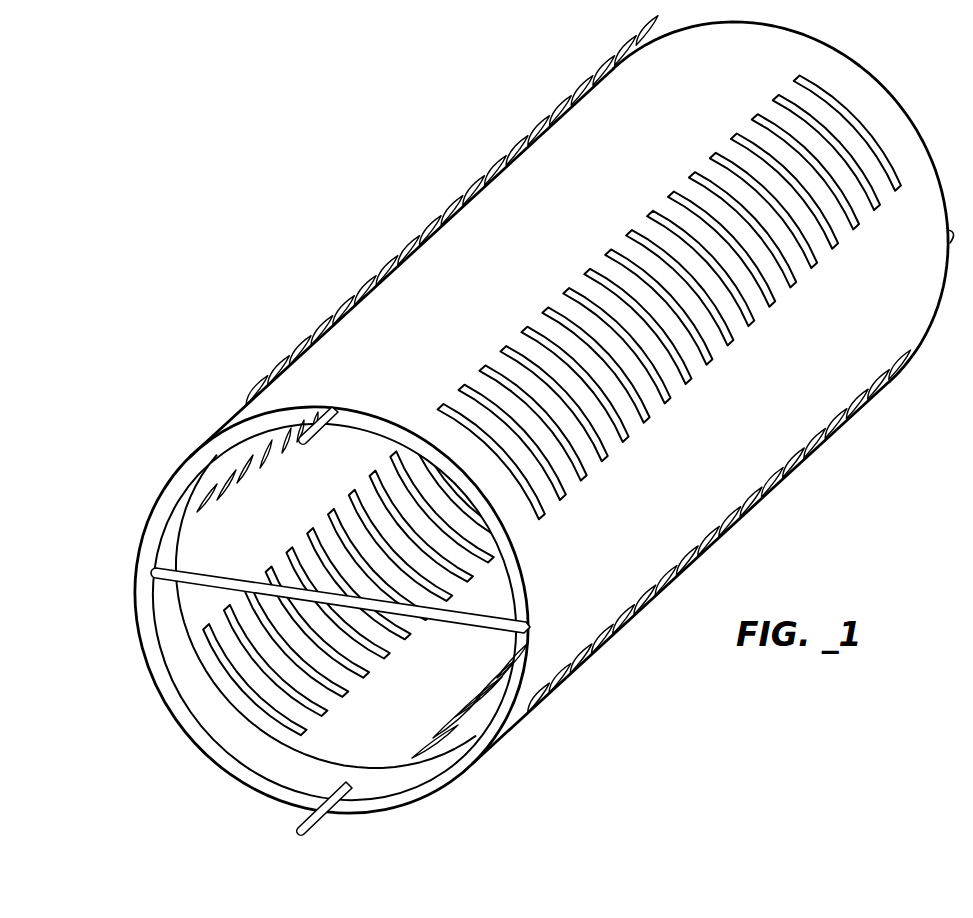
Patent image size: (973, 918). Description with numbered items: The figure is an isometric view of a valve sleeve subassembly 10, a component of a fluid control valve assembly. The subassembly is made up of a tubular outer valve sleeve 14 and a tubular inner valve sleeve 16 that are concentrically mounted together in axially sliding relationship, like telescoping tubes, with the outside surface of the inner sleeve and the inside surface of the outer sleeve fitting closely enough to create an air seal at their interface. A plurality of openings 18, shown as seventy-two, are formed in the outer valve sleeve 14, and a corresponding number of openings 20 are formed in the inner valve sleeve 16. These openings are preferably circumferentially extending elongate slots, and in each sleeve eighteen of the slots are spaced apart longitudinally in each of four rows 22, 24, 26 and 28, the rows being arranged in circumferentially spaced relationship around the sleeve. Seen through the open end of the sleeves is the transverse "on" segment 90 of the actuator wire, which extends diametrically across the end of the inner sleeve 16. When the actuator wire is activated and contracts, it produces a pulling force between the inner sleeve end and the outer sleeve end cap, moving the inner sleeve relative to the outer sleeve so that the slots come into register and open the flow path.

The valve sleeve subassembly 10 is at (408, 178).
The tubular outer valve sleeve 14 is at (520, 700).
The tubular inner valve sleeve 16 is at (383, 758).
The openings 18 is at (512, 160).
The openings 20 is at (445, 724).
The row 22 is at (272, 377).
The row 24 is at (833, 93).
The row 26 is at (602, 660).
The row 28 is at (218, 670).
The transverse segment 90 is at (182, 565).